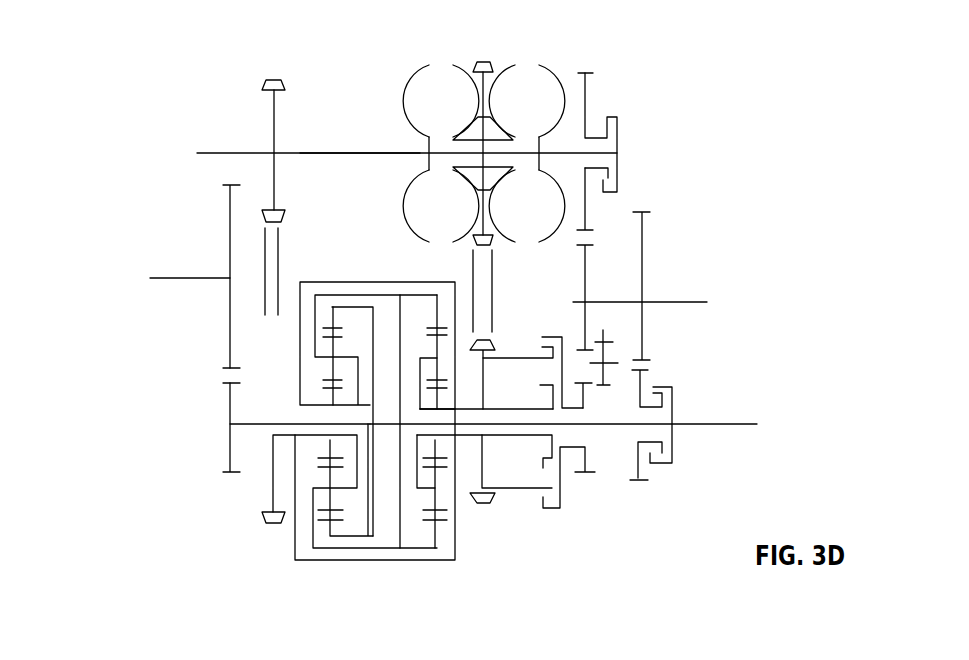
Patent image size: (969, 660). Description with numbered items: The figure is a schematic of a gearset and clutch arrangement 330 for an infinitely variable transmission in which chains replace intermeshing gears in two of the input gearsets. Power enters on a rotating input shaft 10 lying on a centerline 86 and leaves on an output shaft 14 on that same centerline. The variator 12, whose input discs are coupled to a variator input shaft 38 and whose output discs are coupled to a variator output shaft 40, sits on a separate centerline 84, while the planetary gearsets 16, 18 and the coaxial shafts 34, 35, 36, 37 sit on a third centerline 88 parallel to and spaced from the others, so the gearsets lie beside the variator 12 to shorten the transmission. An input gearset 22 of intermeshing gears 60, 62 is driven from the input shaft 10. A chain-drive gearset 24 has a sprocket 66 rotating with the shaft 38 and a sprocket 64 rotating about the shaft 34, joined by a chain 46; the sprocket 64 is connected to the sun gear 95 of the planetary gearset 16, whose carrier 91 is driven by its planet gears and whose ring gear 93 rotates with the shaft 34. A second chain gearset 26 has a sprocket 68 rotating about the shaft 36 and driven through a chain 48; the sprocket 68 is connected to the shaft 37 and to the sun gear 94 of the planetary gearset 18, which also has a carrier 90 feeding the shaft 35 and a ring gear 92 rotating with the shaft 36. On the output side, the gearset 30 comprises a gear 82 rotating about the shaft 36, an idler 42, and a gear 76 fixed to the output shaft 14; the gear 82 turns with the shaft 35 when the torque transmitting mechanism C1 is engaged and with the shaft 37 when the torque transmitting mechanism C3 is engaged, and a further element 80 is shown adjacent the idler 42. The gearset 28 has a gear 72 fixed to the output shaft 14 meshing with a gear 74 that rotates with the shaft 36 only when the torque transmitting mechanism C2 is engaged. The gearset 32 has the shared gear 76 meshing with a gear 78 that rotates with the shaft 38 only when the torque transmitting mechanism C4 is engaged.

The transmission 330 is at (106, 86).
The centerline 84 is at (190, 150).
The variator input shaft 38 is at (330, 151).
The sprocket 66 is at (276, 178).
The chain 46 is at (294, 250).
The input shaft 10 is at (207, 276).
The centerline 86 is at (148, 282).
The gear 60 is at (228, 321).
The gear 62 is at (228, 405).
The shaft 34 is at (250, 422).
The centerline 88 is at (203, 424).
The input gearset 22 is at (229, 487).
The sprocket 64 is at (271, 474).
The gearset 24 is at (262, 527).
The planetary gearset 16 is at (335, 563).
The planetary gearset 18 is at (413, 563).
The ring gear 93 is at (382, 332).
The carrier 91 is at (352, 357).
The sun gear 95 is at (334, 400).
The ring gear 92 is at (437, 328).
The carrier 90 is at (419, 377).
The sun gear 94 is at (432, 443).
The shaft 35 is at (493, 408).
The variator 12 is at (538, 44).
The gear 76 is at (477, 120).
The variator output shaft 40 is at (503, 158).
The chain 48 is at (501, 302).
The shaft 37 is at (519, 357).
The torque transmitting mechanism C3 is at (558, 360).
The torque transmitting mechanism C1 is at (539, 396).
The gear 82 is at (582, 395).
The idler 42 is at (604, 338).
The gear 80 is at (606, 377).
The shaft 36 is at (643, 423).
The torque transmitting mechanism C2 is at (674, 432).
The gear 74 is at (637, 458).
The output gearset 28 is at (643, 486).
The output gearset 30 is at (586, 478).
The sprocket 68 is at (484, 468).
The gearset 26 is at (481, 508).
The output gearset 32 is at (593, 68).
The torque transmitting mechanism C4 is at (603, 132).
The gear 78 is at (587, 213).
The gear 72 is at (643, 257).
The output shaft 14 is at (688, 300).